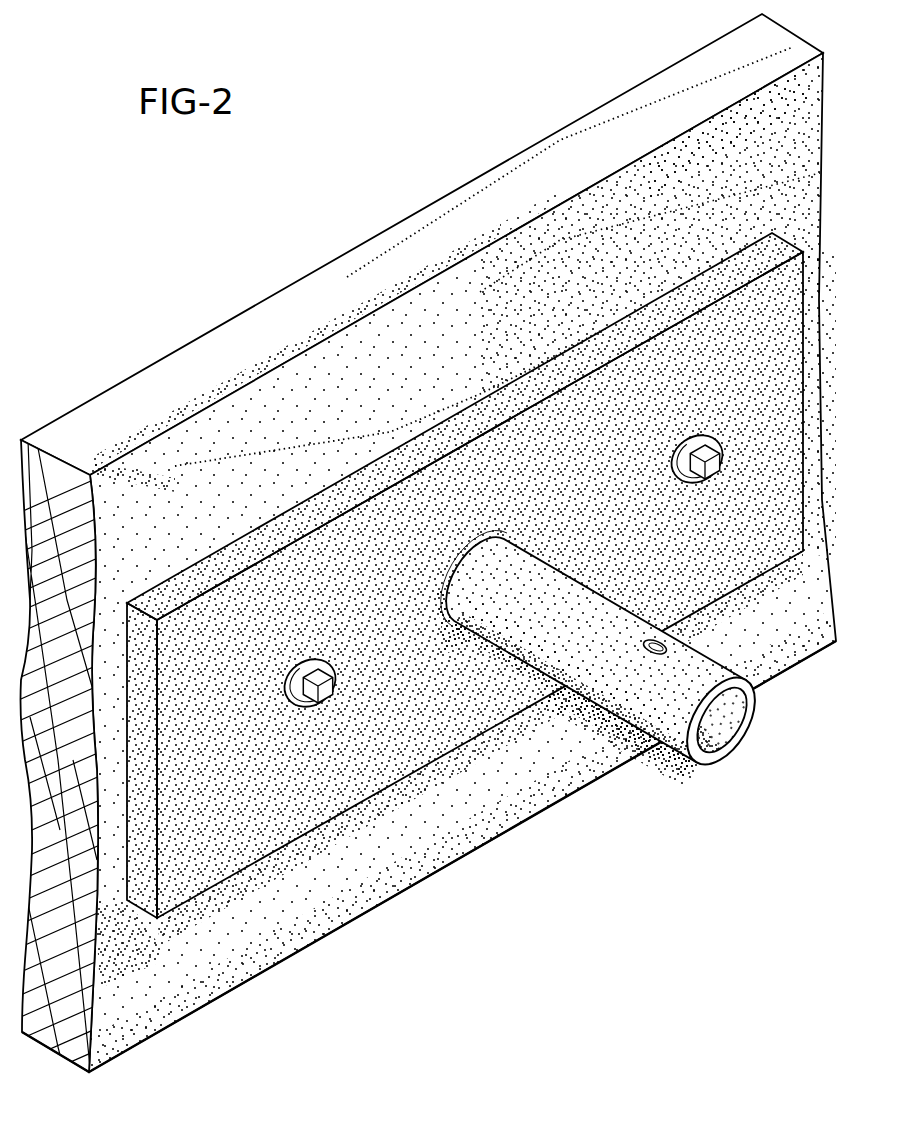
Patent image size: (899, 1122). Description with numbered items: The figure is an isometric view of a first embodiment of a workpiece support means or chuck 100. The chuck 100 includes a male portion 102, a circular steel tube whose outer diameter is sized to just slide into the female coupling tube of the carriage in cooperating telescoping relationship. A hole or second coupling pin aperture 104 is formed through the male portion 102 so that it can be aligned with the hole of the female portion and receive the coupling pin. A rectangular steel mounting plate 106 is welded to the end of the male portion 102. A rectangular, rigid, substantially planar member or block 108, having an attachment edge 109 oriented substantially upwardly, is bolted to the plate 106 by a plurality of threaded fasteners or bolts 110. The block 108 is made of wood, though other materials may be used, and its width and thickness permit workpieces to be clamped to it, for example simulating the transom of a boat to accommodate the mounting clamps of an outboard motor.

The workpiece support means or chuck 100 is at (203, 282).
The male portion 102 is at (635, 673).
The second coupling pin aperture 104 is at (667, 648).
The mounting plate 106 is at (780, 317).
The block 108 is at (425, 562).
The attachment edge 109 is at (482, 213).
The threaded fasteners or bolts 110 is at (723, 457).